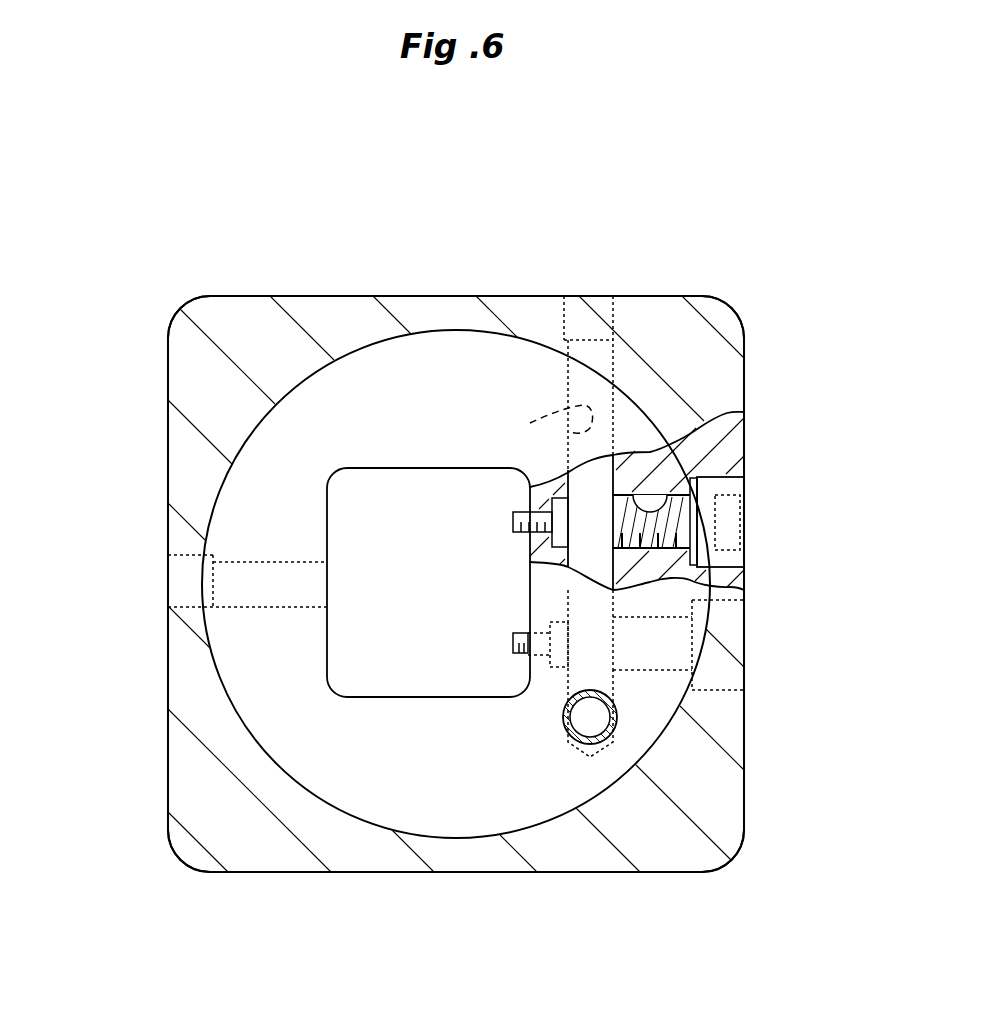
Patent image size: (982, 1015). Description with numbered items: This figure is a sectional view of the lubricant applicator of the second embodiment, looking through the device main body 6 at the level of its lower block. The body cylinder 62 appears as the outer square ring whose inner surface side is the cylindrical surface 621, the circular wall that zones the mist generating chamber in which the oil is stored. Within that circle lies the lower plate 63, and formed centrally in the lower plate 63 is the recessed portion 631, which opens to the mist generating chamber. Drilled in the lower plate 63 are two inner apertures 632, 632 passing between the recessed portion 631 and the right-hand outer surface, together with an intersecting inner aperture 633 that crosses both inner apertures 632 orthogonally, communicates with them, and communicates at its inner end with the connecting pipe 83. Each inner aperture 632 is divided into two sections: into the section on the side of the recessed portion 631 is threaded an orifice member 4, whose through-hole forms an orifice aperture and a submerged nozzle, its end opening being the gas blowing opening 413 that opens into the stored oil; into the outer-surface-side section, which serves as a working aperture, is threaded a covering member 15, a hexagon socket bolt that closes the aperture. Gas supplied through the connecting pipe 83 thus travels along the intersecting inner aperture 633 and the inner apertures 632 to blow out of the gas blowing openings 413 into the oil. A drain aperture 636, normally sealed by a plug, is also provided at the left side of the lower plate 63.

The device main body 6 is at (412, 531).
The body cylinder 62 is at (230, 294).
The cylindrical surface 621 is at (268, 755).
The recessed portion 631 is at (328, 512).
The inner aperture 632 is at (692, 464).
The intersecting inner aperture 633 is at (567, 477).
The drain aperture 636 is at (248, 560).
The lower plate 63 is at (744, 437).
The covering member 15 is at (744, 558).
The orifice member 4 is at (513, 525).
The gas blowing opening 413 is at (513, 520).
The connecting pipe 83 is at (563, 723).